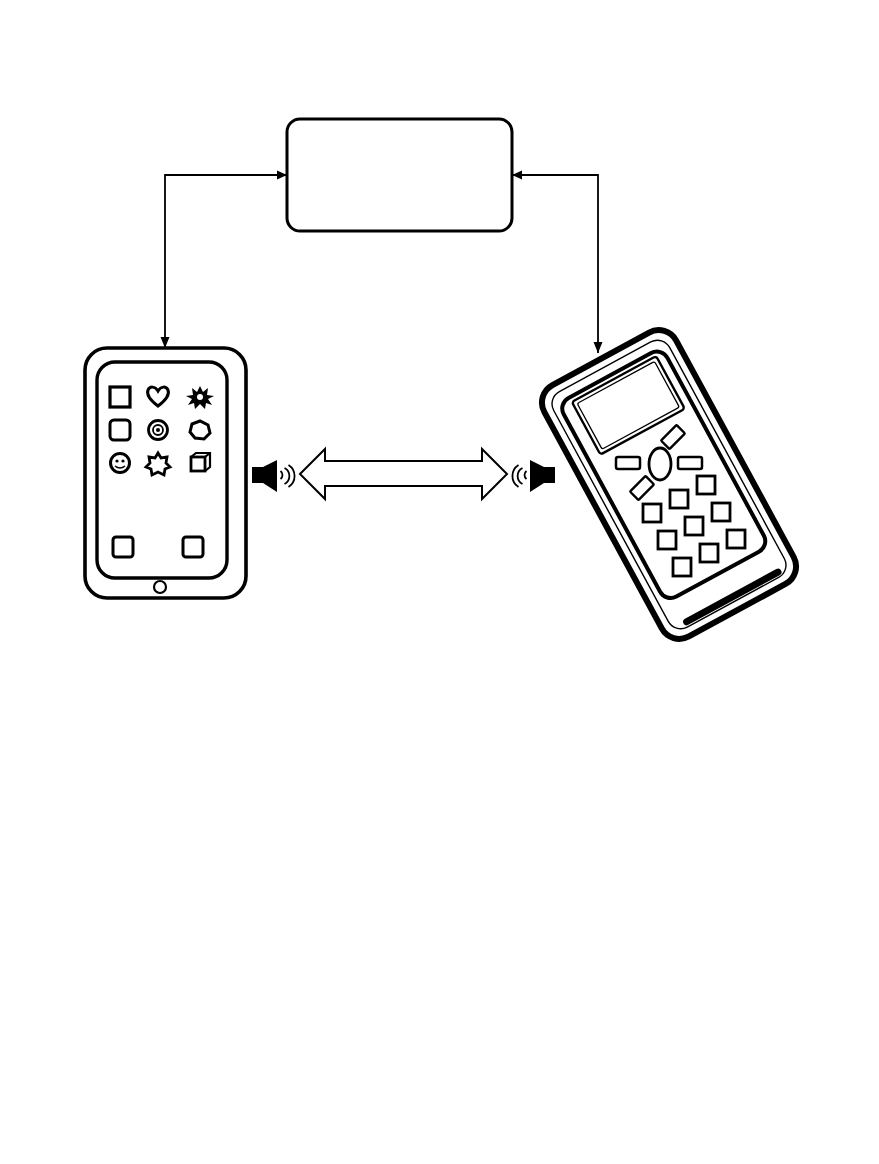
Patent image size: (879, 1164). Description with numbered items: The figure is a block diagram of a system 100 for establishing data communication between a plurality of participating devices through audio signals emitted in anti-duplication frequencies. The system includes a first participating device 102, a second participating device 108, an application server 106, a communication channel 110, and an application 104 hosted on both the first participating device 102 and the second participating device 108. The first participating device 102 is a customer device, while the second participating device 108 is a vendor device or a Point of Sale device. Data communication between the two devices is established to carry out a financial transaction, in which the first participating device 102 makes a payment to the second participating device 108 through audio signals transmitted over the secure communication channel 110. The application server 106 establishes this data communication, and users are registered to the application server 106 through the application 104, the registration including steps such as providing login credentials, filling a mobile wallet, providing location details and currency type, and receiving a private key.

The system 100 is at (806, 33).
The first participating device 102 is at (85, 473).
The application 104 is at (110, 397).
The application server 106 is at (401, 119).
The second participating device 108 is at (688, 358).
The communication channel 110 is at (405, 459).